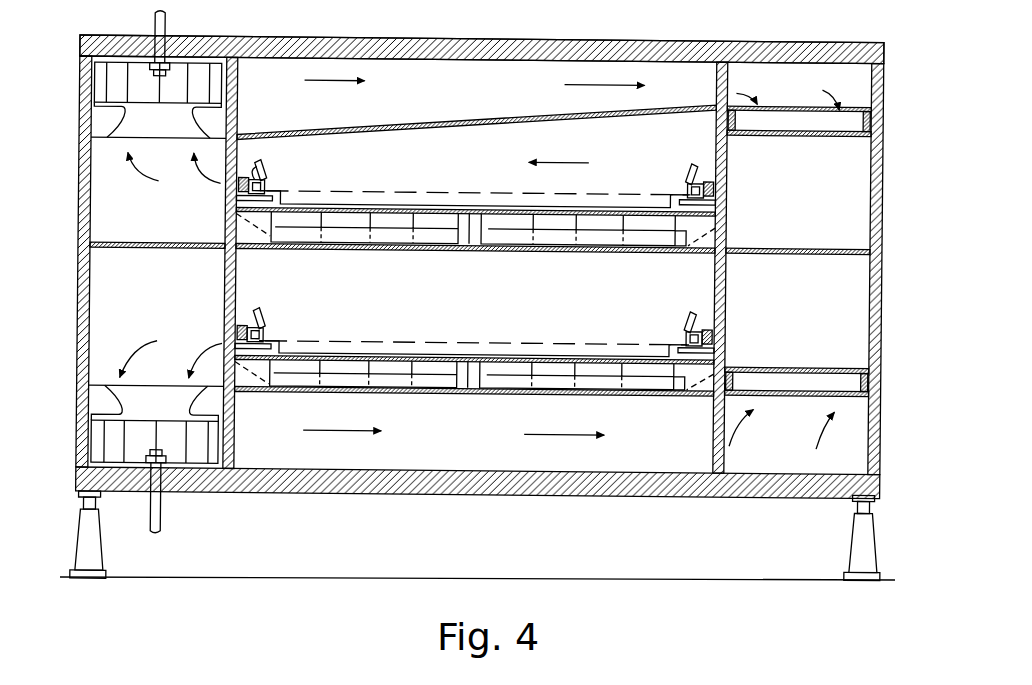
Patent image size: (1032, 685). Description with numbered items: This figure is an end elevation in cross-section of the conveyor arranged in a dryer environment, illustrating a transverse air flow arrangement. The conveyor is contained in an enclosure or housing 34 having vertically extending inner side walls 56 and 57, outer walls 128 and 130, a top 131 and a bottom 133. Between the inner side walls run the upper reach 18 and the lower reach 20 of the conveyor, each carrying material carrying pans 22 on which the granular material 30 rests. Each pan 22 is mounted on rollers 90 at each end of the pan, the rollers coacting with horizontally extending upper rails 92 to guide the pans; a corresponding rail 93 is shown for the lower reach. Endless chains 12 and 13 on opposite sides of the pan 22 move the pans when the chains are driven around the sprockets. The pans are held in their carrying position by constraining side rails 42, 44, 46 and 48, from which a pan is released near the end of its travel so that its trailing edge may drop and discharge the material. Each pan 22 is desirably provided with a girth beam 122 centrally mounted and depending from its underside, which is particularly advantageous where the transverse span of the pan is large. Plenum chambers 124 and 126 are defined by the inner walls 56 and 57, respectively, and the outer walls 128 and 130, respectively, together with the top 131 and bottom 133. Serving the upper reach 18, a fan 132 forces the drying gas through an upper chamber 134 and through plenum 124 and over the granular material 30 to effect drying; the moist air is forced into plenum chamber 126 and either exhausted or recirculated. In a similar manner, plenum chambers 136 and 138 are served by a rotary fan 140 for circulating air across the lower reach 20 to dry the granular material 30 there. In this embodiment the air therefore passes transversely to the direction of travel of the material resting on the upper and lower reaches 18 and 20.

The link chain 12 is at (483, 238).
The endless chain 13 is at (247, 176).
The upper reach 18 is at (475, 246).
The lower reach 20 is at (338, 336).
The material carrying pan 22 is at (477, 248).
The granular material 30 is at (455, 192).
The enclosure or housing 34 is at (463, 37).
The side rail 42 is at (266, 170).
The side rail 44 is at (688, 176).
The side rail 46 is at (263, 314).
The side rail 48 is at (690, 326).
The side wall 56 is at (505, 319).
The side wall 57 is at (228, 283).
The roller 90 is at (248, 178).
The rail 92 is at (238, 206).
The mounting plate 93 is at (705, 343).
The girth beam 122 is at (562, 241).
The plenum chamber 124 is at (798, 150).
The plenum chamber 126 is at (162, 186).
The outer wall 128 is at (884, 284).
The outer wall 130 is at (80, 300).
The top 131 is at (650, 46).
The fan 132 is at (180, 70).
The bottom 133 is at (512, 493).
The upper chamber 134 is at (472, 257).
The plenum chamber 136 is at (796, 385).
The plenum chamber 138 is at (165, 328).
The rotary fan 140 is at (197, 450).